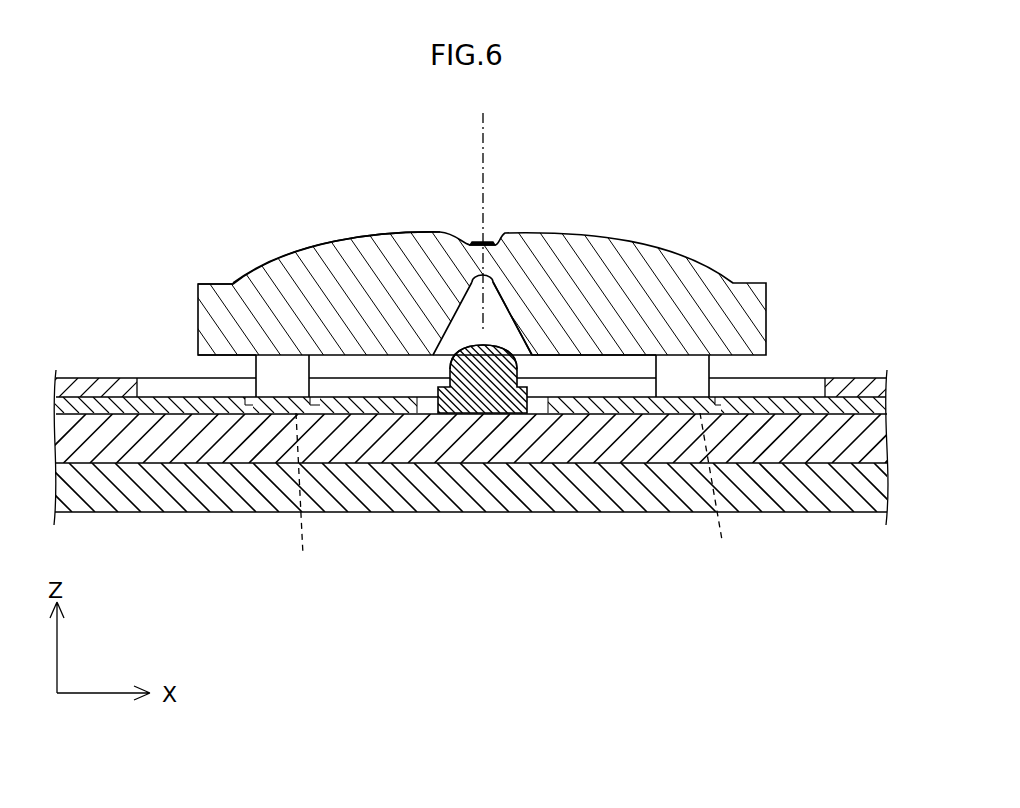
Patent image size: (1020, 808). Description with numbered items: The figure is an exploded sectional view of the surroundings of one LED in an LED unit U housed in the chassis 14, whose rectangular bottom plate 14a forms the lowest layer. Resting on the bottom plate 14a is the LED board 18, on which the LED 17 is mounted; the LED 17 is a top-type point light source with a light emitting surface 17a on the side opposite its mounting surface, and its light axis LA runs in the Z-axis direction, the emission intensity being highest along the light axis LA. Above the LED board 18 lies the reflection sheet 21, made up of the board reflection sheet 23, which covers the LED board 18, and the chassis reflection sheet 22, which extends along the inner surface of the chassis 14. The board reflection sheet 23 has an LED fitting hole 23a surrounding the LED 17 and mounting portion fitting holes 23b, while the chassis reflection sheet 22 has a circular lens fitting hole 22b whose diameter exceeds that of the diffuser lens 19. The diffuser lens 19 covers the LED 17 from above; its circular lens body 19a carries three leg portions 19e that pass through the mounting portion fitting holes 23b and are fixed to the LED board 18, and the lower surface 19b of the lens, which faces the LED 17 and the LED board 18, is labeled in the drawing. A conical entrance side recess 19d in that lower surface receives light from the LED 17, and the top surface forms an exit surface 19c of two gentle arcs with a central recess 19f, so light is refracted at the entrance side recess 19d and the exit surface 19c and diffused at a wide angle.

The chassis 14 is at (473, 517).
The bottom plate 14a is at (176, 502).
The LED 17 is at (487, 402).
The light emitting surface 17a is at (497, 338).
The LED board 18 is at (622, 455).
The diffuser lens 19 is at (767, 305).
The lens body 19a is at (208, 312).
The bottom surface of lens 19b is at (549, 357).
The exit surface 19c is at (375, 232).
The entrance side recess 19d is at (500, 313).
The leg portion 19e is at (691, 372).
The recess 19f is at (495, 243).
The reflection sheet 21 is at (478, 435).
The chassis reflection sheet 22 is at (77, 388).
The lens fitting hole 22b is at (825, 387).
The board reflection sheet 23 is at (853, 405).
The LED fitting hole 23a is at (437, 405).
The mounting portion fitting hole 23b is at (517, 496).
The light axis LA is at (483, 131).
The LED unit U is at (758, 199).